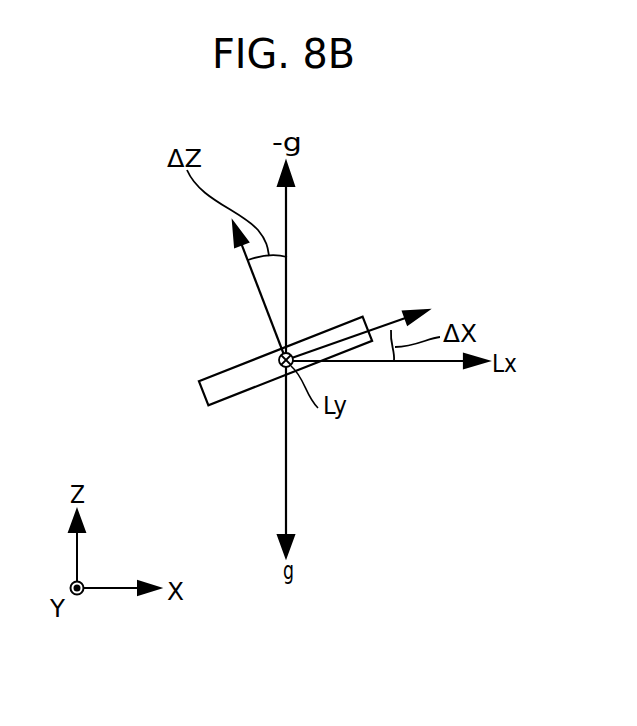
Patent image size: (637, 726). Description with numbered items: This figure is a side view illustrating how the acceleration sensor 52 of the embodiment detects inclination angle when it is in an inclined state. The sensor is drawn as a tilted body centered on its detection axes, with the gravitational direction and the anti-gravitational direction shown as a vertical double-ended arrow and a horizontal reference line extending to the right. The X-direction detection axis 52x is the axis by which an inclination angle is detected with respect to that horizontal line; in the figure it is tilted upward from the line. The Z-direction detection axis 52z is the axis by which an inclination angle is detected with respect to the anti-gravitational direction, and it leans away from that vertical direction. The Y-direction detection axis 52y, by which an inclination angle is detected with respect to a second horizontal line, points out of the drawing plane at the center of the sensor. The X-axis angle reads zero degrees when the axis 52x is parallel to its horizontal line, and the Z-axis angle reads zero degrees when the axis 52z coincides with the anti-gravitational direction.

The acceleration sensor 52 is at (202, 388).
The X-direction detection axis 52x is at (391, 330).
The Y-direction detection axis 52y is at (279, 367).
The Z-direction detection axis 52z is at (248, 258).